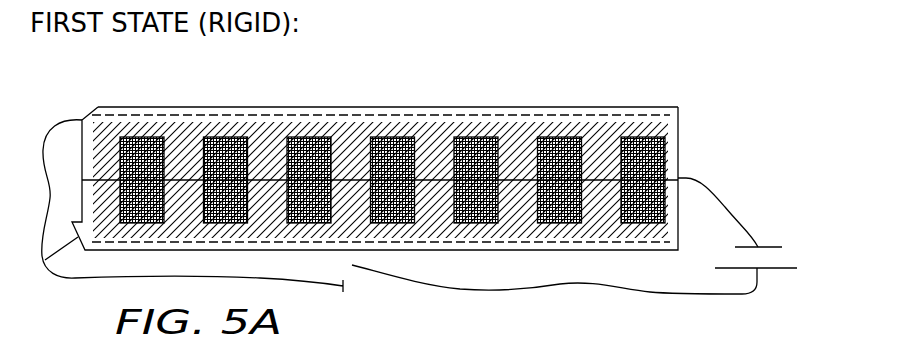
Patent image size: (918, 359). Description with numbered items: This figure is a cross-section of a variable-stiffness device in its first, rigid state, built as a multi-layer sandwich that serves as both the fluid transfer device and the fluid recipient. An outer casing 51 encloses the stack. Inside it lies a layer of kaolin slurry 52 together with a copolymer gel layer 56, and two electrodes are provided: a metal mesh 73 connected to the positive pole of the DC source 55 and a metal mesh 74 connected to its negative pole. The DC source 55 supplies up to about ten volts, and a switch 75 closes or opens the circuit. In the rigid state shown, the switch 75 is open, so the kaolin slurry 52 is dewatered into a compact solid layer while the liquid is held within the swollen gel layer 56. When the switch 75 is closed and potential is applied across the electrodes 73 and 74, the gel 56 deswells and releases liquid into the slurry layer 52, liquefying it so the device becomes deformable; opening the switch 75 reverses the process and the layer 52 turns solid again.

The outer casing 51 is at (143, 107).
The kaolin slurry 52 is at (190, 140).
The copolymer gel layer 56 is at (392, 138).
The metal mesh connected to the positive pole 73 is at (619, 113).
The metal mesh connected to the negative pole 74 is at (686, 178).
The DC source 55 is at (768, 247).
The switch 75 is at (405, 281).